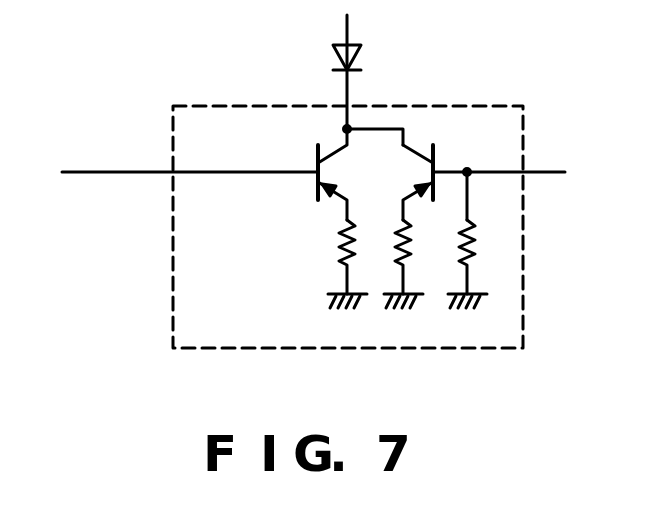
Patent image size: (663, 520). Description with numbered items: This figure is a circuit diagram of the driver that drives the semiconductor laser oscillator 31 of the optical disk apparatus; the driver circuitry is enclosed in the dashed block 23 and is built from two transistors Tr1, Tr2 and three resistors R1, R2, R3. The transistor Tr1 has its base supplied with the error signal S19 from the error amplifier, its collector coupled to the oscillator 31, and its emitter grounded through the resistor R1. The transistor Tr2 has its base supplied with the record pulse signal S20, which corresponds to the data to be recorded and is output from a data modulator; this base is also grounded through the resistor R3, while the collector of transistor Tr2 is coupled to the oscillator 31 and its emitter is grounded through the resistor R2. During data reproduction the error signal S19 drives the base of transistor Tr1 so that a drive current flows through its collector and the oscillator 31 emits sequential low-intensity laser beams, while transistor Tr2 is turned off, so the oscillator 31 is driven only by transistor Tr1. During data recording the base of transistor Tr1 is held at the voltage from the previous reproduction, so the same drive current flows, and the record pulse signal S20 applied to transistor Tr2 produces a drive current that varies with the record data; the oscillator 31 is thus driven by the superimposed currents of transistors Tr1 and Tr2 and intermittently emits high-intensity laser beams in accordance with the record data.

The semiconductor laser oscillator 31 is at (362, 58).
The current mirror circuit 23 is at (172, 152).
The error signal S19 is at (96, 175).
The record pulse signal S20 is at (548, 170).
The transistor Tr1 is at (312, 160).
The transistor Tr2 is at (447, 160).
The resistor R1 is at (343, 240).
The resistor R2 is at (412, 230).
The resistor R3 is at (481, 228).